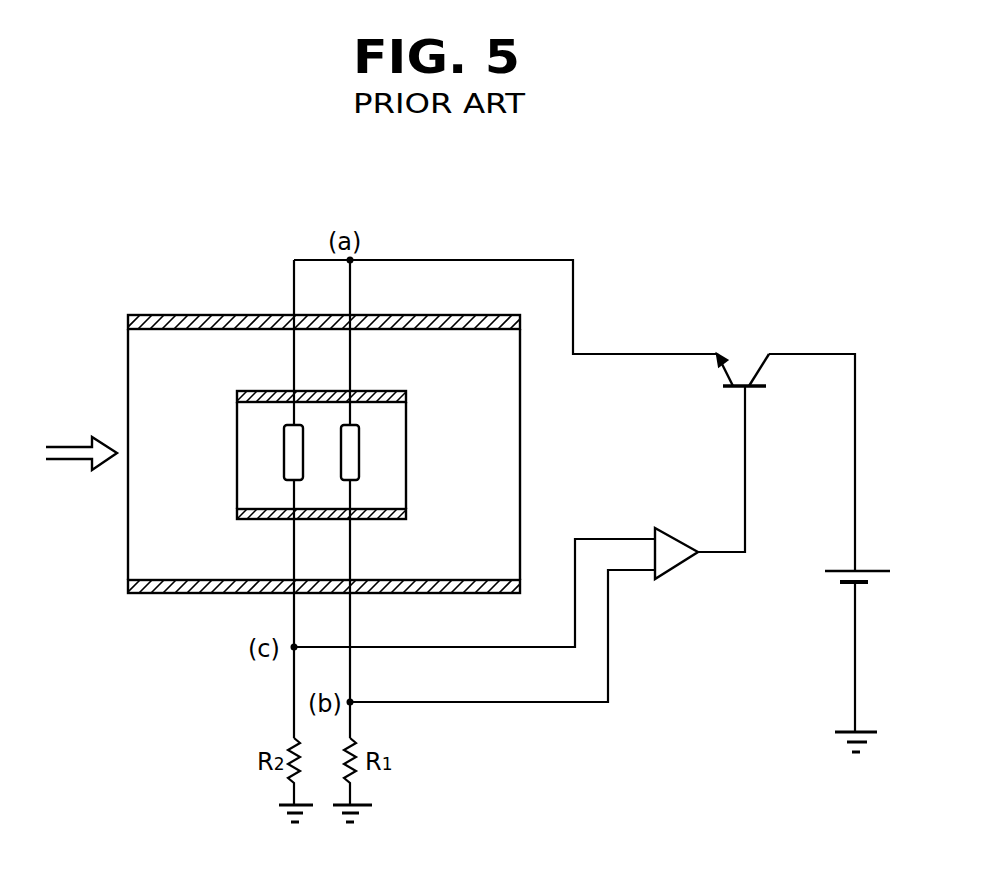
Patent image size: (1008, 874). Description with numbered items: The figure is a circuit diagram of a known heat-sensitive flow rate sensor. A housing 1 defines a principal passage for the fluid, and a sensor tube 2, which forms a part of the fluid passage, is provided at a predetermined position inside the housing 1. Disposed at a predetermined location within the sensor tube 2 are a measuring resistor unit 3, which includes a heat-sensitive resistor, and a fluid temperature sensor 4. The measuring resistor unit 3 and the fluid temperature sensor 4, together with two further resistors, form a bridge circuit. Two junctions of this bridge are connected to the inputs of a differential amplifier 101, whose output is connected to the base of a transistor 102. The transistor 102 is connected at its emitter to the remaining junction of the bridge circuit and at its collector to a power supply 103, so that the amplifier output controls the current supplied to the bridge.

The housing 1 is at (201, 313).
The sensor tube 2 is at (250, 392).
The measuring resistor unit 3 is at (288, 440).
The fluid temperature sensor 4 is at (355, 437).
The differential amplifier 101 is at (676, 568).
The transistor 102 is at (745, 382).
The power supply 103 is at (828, 570).